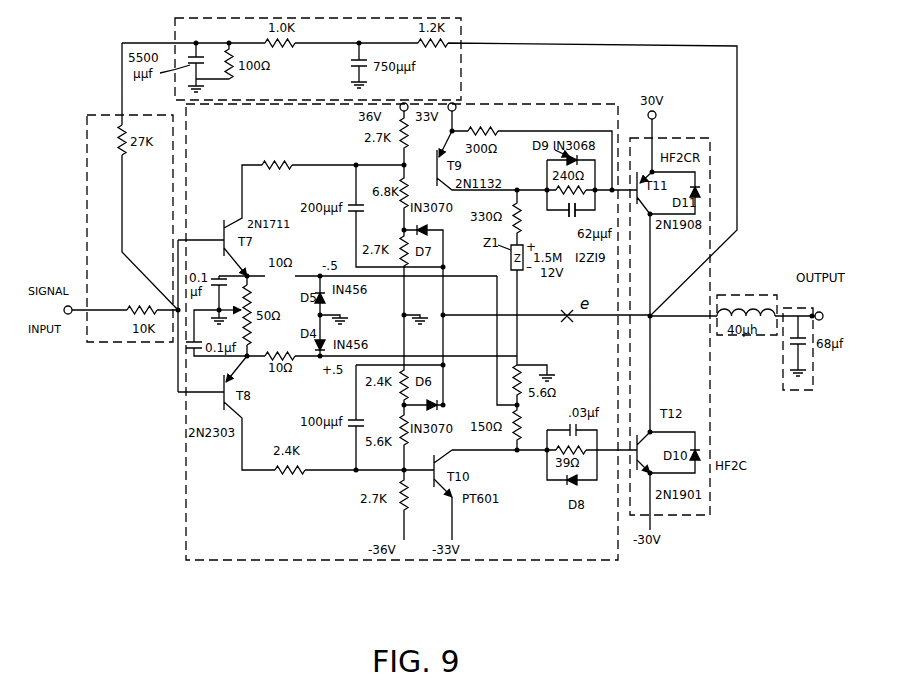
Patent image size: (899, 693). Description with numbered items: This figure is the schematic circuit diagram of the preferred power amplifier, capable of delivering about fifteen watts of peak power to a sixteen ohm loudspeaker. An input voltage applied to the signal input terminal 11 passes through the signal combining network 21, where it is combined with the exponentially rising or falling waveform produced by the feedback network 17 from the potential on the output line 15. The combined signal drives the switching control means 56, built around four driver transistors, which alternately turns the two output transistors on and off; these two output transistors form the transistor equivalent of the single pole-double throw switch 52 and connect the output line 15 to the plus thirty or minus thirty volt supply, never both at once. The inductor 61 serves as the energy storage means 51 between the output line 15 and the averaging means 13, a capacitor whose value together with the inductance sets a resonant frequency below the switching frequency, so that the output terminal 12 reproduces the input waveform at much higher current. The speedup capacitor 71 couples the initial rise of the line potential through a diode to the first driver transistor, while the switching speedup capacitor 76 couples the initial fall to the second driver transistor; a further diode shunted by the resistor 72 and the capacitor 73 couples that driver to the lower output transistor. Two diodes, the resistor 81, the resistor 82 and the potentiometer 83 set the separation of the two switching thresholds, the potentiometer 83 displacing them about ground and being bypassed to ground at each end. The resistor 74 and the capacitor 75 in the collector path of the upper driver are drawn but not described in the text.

The signal input terminal 11 is at (62, 310).
The output terminal 12 is at (822, 312).
The averaging means 13 is at (799, 402).
The output line 15 is at (683, 332).
The feedback network 17 is at (463, 34).
The signal combining network 21 is at (87, 158).
The energy storage means 51 is at (750, 295).
The single pole-double throw switch 52 is at (678, 140).
The switching control means 56 is at (512, 107).
The inductor 61 is at (736, 302).
The speedup capacitor 71 is at (360, 210).
The resistor 72 is at (547, 445).
The capacitor 73 is at (571, 420).
The resistor 74 is at (562, 190).
The capacitor 75 is at (566, 217).
The switching speedup capacitor 76 is at (358, 426).
The resistor 81 is at (261, 300).
The resistor 82 is at (298, 365).
The potentiometer 83 is at (260, 333).